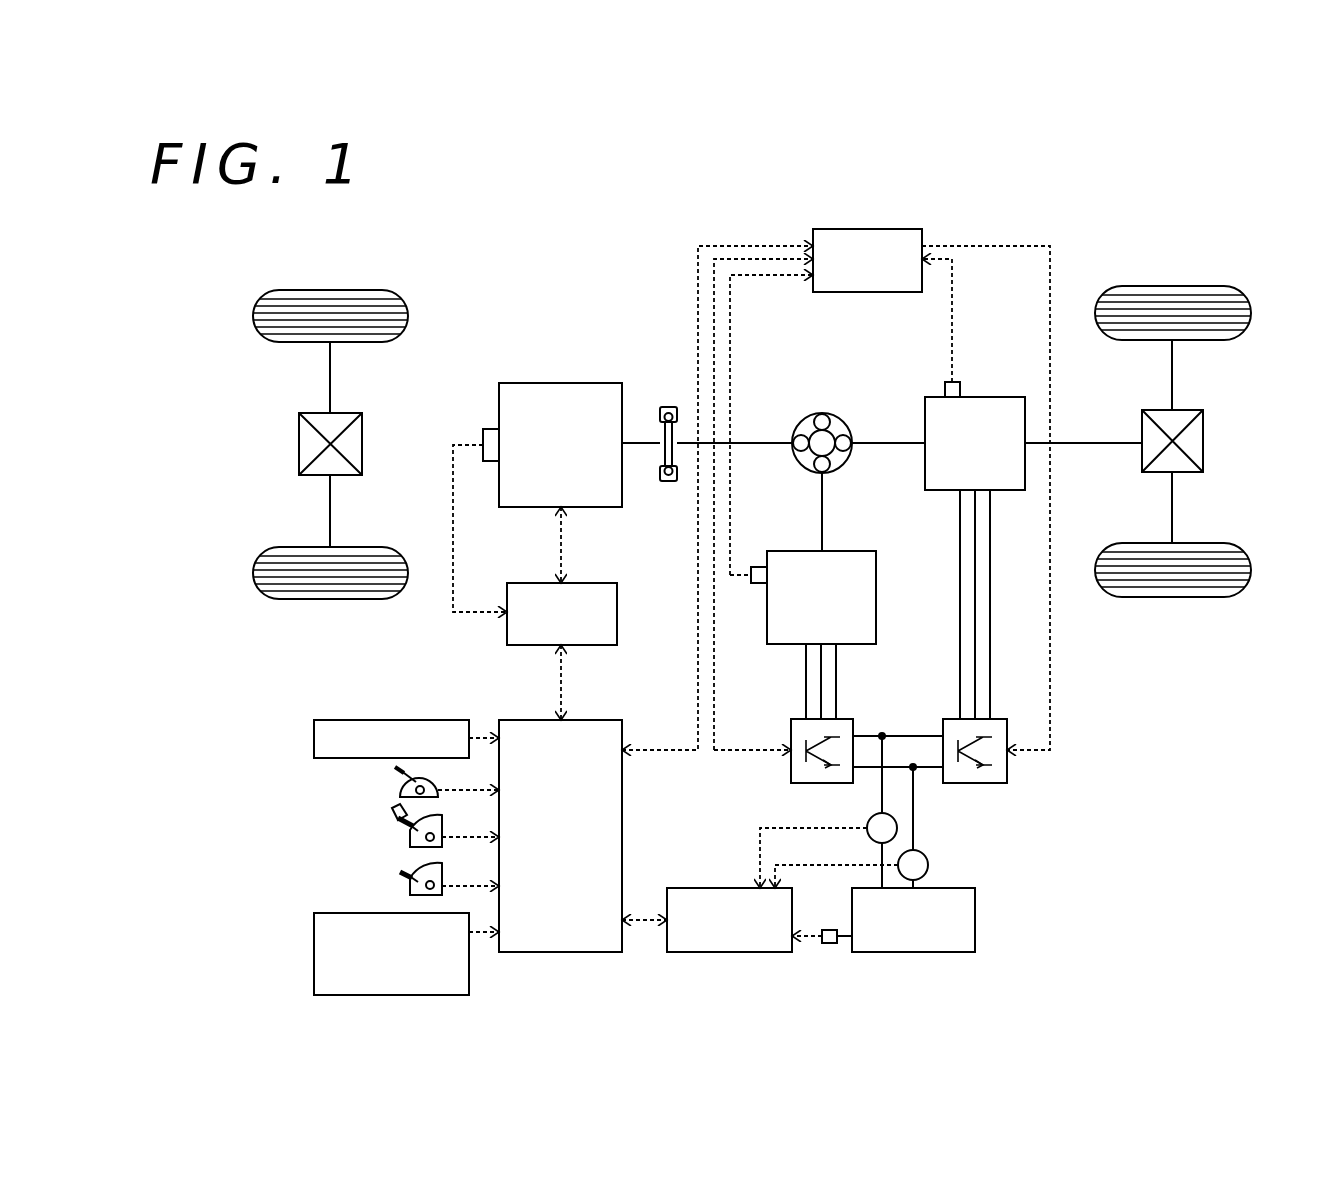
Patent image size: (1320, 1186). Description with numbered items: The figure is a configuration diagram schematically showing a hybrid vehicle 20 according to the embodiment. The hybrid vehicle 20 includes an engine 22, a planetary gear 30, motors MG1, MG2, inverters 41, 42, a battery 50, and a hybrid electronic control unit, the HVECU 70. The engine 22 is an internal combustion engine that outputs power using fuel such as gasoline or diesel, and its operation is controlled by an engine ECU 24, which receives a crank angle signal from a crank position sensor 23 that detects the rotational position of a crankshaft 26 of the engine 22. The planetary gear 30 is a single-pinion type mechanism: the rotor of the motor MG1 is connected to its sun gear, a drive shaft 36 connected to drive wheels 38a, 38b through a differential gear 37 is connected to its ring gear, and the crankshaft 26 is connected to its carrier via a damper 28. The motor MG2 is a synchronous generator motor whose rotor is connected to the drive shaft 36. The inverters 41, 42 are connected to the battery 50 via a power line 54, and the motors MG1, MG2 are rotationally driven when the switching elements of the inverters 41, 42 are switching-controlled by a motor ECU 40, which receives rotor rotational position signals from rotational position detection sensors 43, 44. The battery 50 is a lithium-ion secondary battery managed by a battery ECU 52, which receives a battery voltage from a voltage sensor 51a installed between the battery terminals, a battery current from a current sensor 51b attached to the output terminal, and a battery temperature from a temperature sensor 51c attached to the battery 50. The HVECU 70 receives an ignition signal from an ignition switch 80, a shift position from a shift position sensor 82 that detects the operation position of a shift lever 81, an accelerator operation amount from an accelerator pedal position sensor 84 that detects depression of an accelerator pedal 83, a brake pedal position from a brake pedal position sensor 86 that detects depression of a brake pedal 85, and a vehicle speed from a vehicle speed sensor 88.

The hybrid vehicle 20 is at (1020, 199).
The engine 22 is at (592, 383).
The crank position sensor 23 is at (490, 429).
The engine ECU 24 is at (590, 583).
The crankshaft 26 is at (636, 440).
The damper 28 is at (668, 483).
The planetary gear 30 is at (825, 413).
The drive shaft 36 is at (1105, 440).
The differential gear 37 is at (1189, 408).
The drive wheel 38a is at (1172, 285).
The drive wheel 38b is at (1172, 598).
The motor ECU 40 is at (883, 229).
The inverter 41 is at (848, 718).
The inverter 42 is at (1002, 718).
The rotational position detection sensor 43 is at (758, 567).
The rotational position detection sensor 44 is at (945, 382).
The battery 50 is at (975, 920).
The voltage sensor 51a is at (928, 863).
The current sensor 51b is at (897, 826).
The temperature sensor 51c is at (830, 944).
The battery ECU 52 is at (730, 887).
The power line 54 is at (905, 765).
The HVECU 70 is at (592, 719).
The ignition switch 80 is at (314, 737).
The shift lever 81 is at (394, 777).
The shift position sensor 82 is at (400, 795).
The accelerator pedal 83 is at (390, 822).
The accelerator pedal position sensor 84 is at (410, 840).
The brake pedal 85 is at (398, 876).
The brake pedal position sensor 86 is at (412, 893).
The vehicle speed sensor 88 is at (314, 915).
The motor MG1 is at (858, 551).
The motor MG2 is at (990, 397).